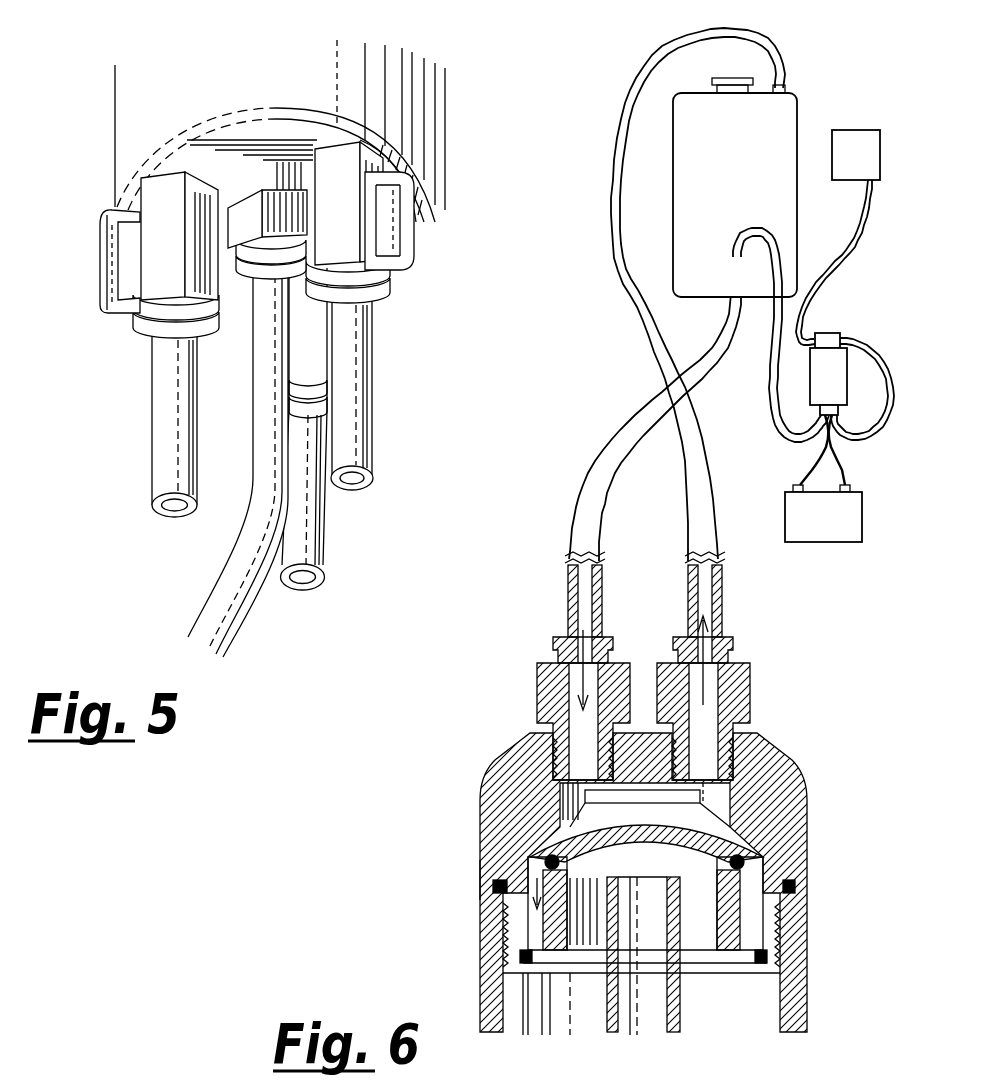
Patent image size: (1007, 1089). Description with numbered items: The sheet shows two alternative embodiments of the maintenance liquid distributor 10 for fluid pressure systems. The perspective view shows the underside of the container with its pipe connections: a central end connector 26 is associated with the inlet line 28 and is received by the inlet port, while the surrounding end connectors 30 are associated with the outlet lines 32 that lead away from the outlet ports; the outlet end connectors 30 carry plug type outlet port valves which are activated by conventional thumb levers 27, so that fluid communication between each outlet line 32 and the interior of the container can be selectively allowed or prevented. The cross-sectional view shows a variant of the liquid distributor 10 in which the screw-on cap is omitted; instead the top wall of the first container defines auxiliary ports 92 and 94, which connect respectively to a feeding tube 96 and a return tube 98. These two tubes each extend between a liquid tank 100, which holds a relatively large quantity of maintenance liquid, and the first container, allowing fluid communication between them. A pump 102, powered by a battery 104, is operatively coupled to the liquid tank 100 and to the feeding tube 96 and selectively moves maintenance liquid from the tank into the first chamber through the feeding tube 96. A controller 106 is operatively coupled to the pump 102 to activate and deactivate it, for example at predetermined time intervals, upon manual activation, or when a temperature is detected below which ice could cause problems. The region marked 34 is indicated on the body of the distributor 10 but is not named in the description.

In FIG. 5, the liquid distributor 10 is at (100, 428).
In FIG. 6, the liquid distributor 10 is at (410, 800).
In FIG. 5, the end connector 26 is at (253, 212).
In FIG. 5, the thumb lever 27 is at (405, 262).
In FIG. 5, the inlet line 28 is at (228, 648).
In FIG. 5, the end connector 30 is at (165, 195).
In FIG. 5, the outlet line 32 is at (153, 470).
In FIG. 6, the housing seal 34 is at (476, 862).
In FIG. 6, the auxiliary port 92 is at (548, 737).
In FIG. 6, the auxiliary port 94 is at (748, 737).
In FIG. 6, the feeding tube 96 is at (570, 533).
In FIG. 6, the return tube 98 is at (686, 530).
In FIG. 6, the liquid tank 100 is at (675, 197).
In FIG. 6, the pump 102 is at (832, 352).
In FIG. 6, the battery 104 is at (803, 528).
In FIG. 6, the controller 106 is at (843, 140).